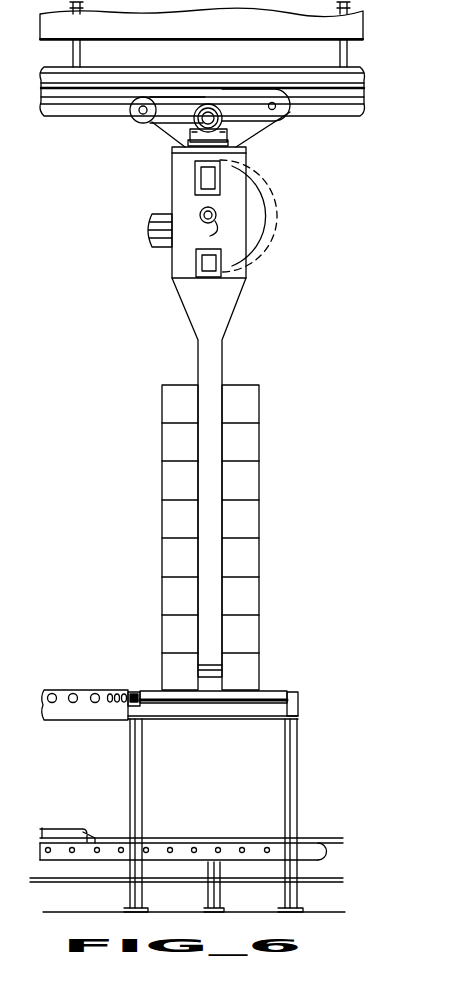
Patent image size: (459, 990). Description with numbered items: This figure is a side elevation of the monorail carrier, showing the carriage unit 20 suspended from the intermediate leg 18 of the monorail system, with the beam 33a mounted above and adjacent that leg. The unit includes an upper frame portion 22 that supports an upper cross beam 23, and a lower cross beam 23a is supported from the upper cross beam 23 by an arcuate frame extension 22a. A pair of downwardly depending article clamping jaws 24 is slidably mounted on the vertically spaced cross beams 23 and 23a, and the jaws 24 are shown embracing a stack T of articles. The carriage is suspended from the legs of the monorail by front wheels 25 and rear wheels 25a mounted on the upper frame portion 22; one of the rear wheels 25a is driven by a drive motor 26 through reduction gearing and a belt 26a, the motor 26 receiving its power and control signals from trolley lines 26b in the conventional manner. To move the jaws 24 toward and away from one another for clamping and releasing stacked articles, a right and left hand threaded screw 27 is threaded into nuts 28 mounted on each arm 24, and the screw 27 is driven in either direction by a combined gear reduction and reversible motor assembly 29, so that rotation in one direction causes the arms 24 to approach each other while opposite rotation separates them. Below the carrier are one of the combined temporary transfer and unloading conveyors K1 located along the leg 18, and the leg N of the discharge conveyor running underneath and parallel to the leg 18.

The beam 33a is at (236, 33).
The intermediate leg 18 is at (73, 108).
The frame portion 22 is at (216, 129).
The rear wheels 25a is at (122, 114).
The drive motor 26 is at (214, 114).
The belt 26a is at (173, 100).
The trolley lines 26b is at (330, 96).
The front wheels 25 is at (288, 110).
The arcuate frame extension 22a is at (257, 214).
The upper cross beam 23 is at (200, 178).
The lower cross beam 23a is at (198, 264).
The nuts 28 is at (203, 211).
The right and left hand threaded screw 27 is at (206, 224).
The combined gear reduction and reversible motor assembly 29 is at (150, 231).
The carriage unit 20 is at (232, 331).
The article clamping jaws 24 is at (207, 484).
The tray stack T is at (250, 440).
The combined temporary transfer and unloading conveyor K1 is at (90, 690).
The leg of discharge conveyor N is at (108, 832).